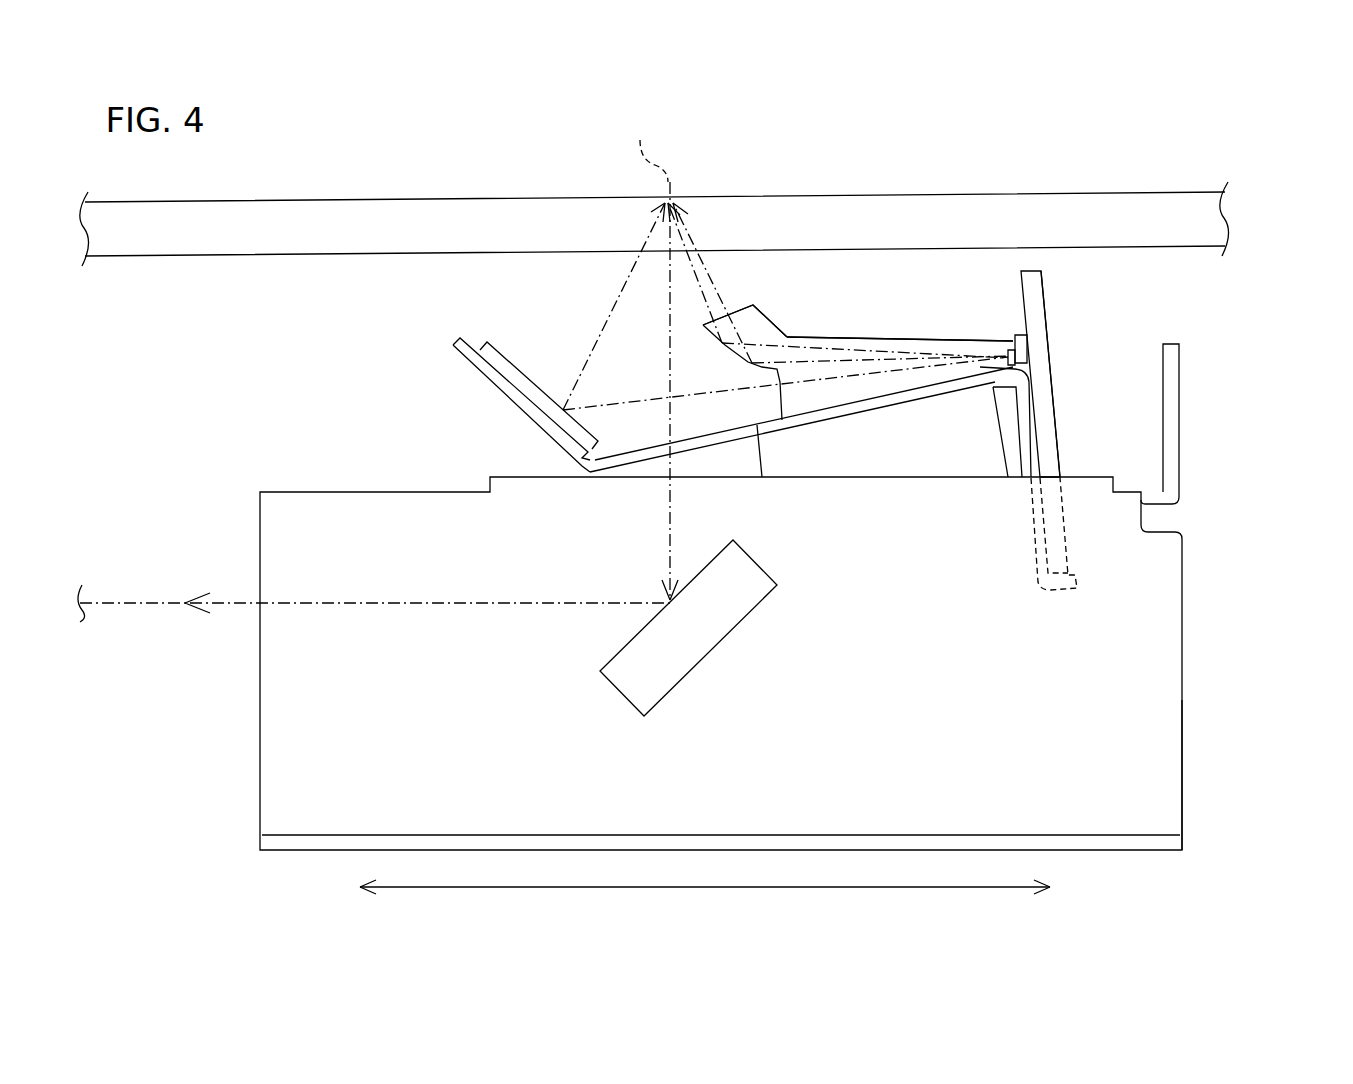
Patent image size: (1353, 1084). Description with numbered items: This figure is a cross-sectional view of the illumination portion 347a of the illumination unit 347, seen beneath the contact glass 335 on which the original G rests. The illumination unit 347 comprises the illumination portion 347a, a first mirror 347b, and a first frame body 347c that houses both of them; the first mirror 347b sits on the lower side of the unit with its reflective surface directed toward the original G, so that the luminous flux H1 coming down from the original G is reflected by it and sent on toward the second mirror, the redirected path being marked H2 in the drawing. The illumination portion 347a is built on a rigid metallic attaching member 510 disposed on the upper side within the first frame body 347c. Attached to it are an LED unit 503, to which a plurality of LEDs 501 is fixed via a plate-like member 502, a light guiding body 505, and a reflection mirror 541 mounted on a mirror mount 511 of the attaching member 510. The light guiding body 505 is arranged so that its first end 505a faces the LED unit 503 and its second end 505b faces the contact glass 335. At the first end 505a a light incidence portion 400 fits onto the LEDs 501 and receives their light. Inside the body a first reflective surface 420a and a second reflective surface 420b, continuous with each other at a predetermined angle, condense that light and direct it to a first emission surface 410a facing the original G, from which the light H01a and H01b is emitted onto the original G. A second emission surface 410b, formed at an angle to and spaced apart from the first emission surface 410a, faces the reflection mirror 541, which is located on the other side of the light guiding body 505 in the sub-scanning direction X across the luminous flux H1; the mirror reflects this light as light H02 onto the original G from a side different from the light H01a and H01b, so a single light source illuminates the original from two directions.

The contact glass 335 is at (1137, 210).
The illumination unit 347 is at (1222, 357).
The illumination portion 347a is at (1078, 352).
The first mirror 347b is at (680, 684).
The first frame body 347c is at (1170, 792).
The light incidence portion 400 is at (998, 383).
The first emission surface 410a is at (733, 316).
The second emission surface 410b is at (768, 410).
The first reflective surface 420a is at (750, 363).
The second reflective surface 420b is at (707, 332).
The LED 501 is at (1017, 333).
The plate-like member 502 is at (1052, 400).
The LED unit 503 is at (1062, 290).
The light guiding body 505 is at (888, 337).
The first end 505a is at (1008, 357).
The second end 505b is at (753, 305).
The attaching member 510 is at (479, 385).
The mirror mount 511 is at (532, 414).
The reflection mirror 541 is at (486, 344).
The original G is at (646, 147).
The light H01a is at (705, 263).
The light H01b is at (733, 277).
The light H02 is at (632, 272).
The luminous flux H1 is at (685, 506).
The optical axis after mirror H2 is at (478, 604).
The sub-scanning direction X is at (705, 906).